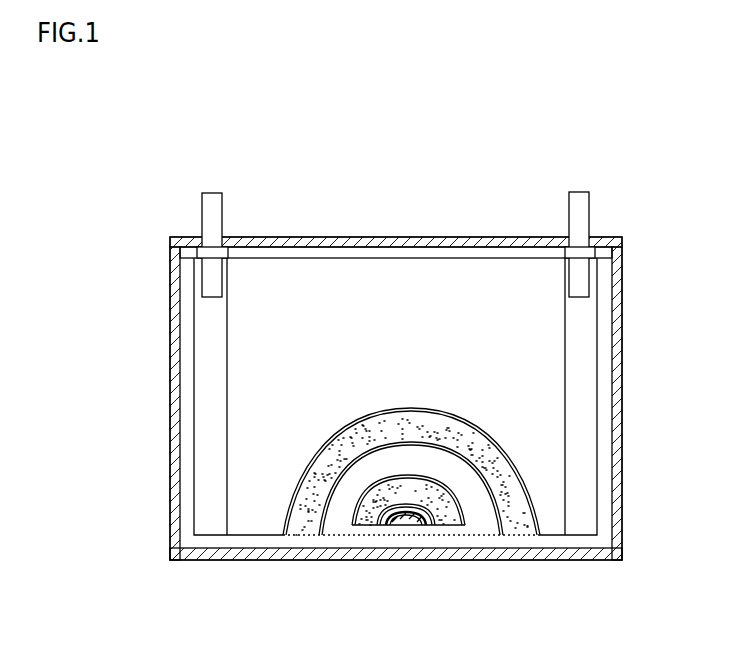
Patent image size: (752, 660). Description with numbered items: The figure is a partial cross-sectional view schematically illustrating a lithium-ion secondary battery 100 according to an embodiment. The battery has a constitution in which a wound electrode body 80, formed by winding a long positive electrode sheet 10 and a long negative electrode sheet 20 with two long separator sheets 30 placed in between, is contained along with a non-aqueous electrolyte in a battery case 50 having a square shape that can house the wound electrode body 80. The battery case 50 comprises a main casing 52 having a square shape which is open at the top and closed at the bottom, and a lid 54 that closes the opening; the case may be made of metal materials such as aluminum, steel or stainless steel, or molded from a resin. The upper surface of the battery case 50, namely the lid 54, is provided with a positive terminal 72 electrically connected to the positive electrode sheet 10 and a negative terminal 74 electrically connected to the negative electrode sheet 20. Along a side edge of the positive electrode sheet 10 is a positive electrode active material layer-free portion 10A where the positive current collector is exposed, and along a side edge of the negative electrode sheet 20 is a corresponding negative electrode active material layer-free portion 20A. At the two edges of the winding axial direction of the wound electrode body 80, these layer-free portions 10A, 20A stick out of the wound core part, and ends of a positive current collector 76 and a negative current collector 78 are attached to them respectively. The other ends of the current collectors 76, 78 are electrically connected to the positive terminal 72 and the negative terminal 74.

The lithium-ion secondary battery 100 is at (676, 91).
The positive electrode sheet 10 is at (255, 517).
The positive electrode active material layer-free portion 10A is at (207, 448).
The negative electrode sheet 20 is at (333, 520).
The negative electrode active material layer-free portion 20A is at (590, 460).
The separator sheet 30 is at (297, 522).
The battery case 50 is at (620, 395).
The main casing 52 is at (620, 520).
The lid 54 is at (300, 237).
The positive terminal 72 is at (208, 193).
The negative terminal 74 is at (578, 192).
The positive current collector 76 is at (205, 293).
The negative current collector 78 is at (600, 290).
The wound electrode body 80 is at (545, 535).